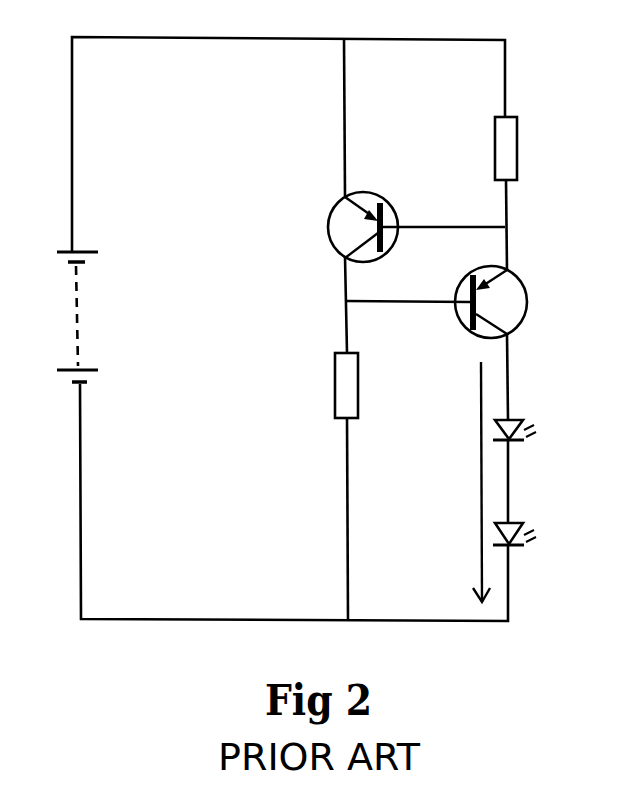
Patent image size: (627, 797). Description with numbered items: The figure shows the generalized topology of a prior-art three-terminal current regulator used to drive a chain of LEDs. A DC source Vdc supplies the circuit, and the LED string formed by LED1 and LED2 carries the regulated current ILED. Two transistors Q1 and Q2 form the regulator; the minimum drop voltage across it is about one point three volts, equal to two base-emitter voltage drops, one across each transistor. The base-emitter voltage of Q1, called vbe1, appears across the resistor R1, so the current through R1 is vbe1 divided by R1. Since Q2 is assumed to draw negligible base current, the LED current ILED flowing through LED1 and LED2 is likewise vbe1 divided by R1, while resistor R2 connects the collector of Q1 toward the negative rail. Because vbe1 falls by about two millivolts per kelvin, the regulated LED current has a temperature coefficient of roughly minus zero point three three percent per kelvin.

The DC supply voltage Vdc is at (97, 317).
The resistor R1 is at (531, 148).
The resistor R2 is at (324, 385).
The transistor Q1 is at (338, 227).
The transistor Q2 is at (520, 302).
The light emitting diode LED1 is at (547, 436).
The light emitting diode LED2 is at (549, 540).
The LED current ILED is at (460, 482).